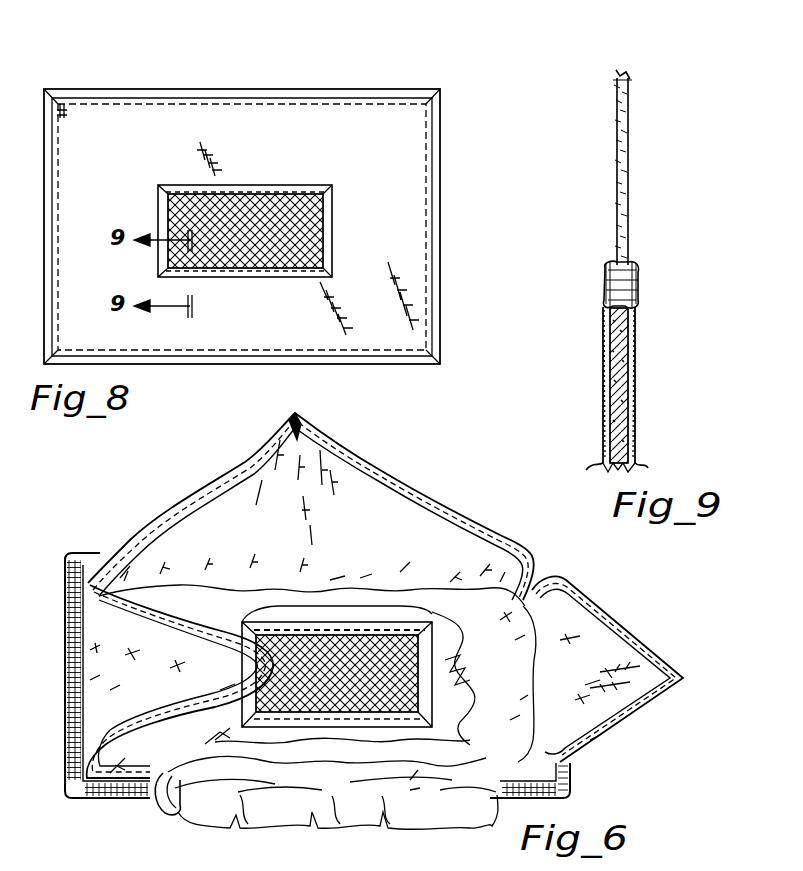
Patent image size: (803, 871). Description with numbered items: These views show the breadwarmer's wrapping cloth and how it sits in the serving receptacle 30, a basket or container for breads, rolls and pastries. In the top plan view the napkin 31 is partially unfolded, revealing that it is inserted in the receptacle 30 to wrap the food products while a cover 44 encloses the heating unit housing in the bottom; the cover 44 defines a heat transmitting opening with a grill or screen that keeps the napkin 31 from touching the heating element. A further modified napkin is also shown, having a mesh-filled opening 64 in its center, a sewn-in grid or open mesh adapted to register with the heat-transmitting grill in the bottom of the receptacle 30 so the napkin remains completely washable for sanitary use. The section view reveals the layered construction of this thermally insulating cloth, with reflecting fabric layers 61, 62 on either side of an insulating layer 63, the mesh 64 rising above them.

In FIG. 6, the serving receptacle 30 is at (52, 565).
In FIG. 6, the napkin 31 is at (412, 505).
In FIG. 6, the cover 44 is at (395, 660).
In FIG. 8, the reflecting fabric layer 61 is at (395, 172).
In FIG. 9, the reflecting fabric layer 61 is at (605, 325).
In FIG. 9, the reflecting fabric layer 62 is at (635, 356).
In FIG. 9, the insulating layer 63 is at (618, 383).
In FIG. 8, the mesh-filled opening 64 is at (298, 196).
In FIG. 9, the mesh-filled opening 64 is at (617, 182).